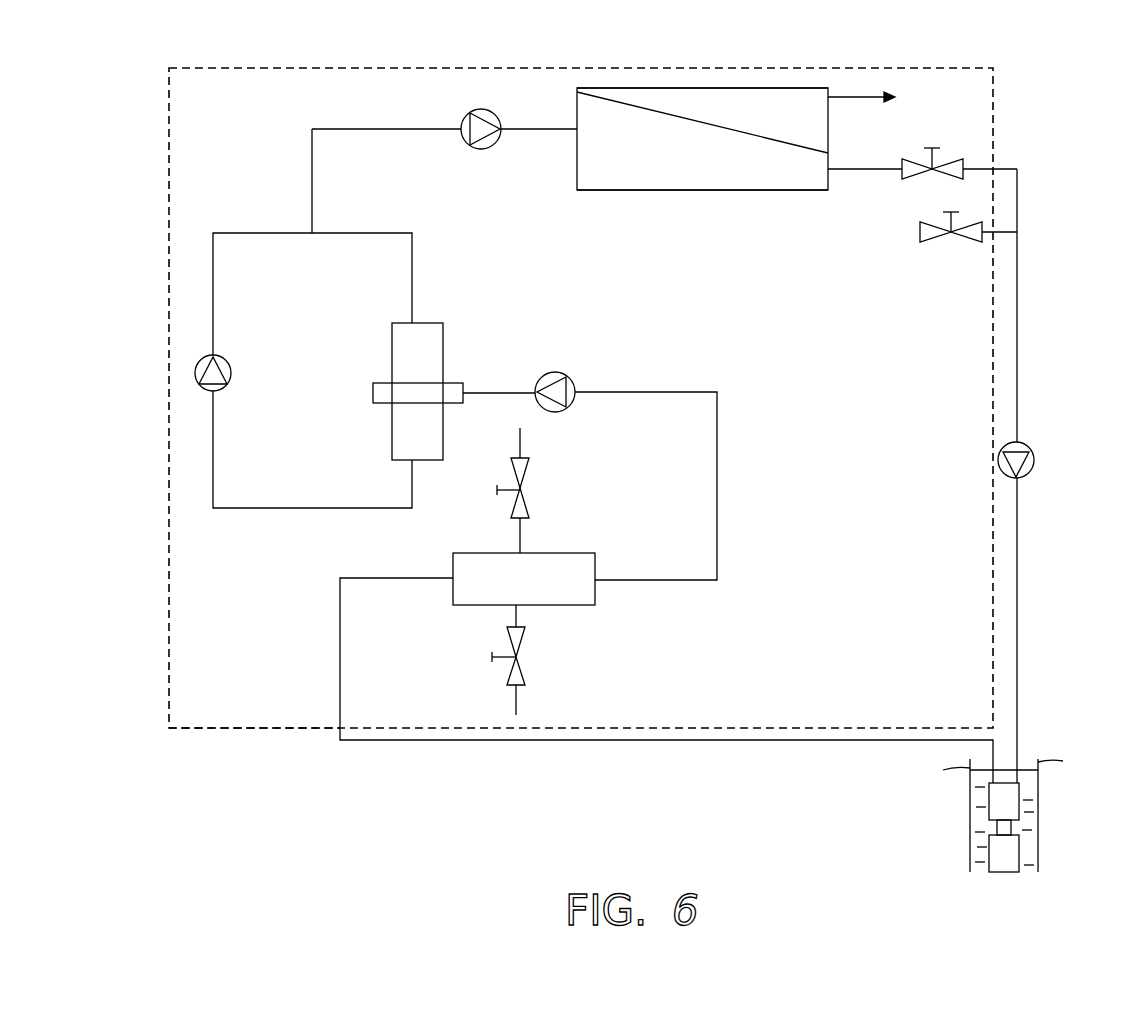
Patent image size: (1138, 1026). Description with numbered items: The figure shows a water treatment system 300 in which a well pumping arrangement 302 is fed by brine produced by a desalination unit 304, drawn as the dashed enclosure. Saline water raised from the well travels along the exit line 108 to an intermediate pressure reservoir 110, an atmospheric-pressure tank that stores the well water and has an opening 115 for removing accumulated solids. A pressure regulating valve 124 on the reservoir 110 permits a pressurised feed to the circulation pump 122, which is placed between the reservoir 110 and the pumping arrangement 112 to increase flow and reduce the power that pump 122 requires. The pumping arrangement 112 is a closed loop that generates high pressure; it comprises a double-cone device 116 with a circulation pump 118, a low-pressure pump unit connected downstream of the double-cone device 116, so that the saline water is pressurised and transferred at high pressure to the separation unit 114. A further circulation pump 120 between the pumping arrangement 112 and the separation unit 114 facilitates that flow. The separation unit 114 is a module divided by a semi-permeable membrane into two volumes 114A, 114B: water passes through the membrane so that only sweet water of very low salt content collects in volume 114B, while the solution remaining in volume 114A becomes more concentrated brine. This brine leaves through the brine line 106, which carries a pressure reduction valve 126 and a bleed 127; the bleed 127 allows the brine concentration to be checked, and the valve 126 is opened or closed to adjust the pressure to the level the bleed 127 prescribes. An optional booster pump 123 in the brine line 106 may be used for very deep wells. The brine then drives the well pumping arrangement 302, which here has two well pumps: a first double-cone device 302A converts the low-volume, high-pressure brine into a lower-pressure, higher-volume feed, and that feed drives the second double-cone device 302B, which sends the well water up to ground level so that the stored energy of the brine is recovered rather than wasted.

The water treatment system 300 is at (541, 49).
The desalination unit 304 is at (305, 730).
The circulation pump 120 is at (490, 146).
The pumping arrangement 112 is at (504, 256).
The circulation pump 118 is at (228, 364).
The double-cone device 116 is at (392, 346).
The circulation pump 122 is at (553, 383).
The intermediate pressure reservoir 110 is at (553, 551).
The pressure regulating valve 124 is at (526, 498).
The opening 115 is at (508, 683).
The exit line 108 is at (650, 740).
The separation unit 114 is at (621, 194).
The volume 114A is at (697, 172).
The volume 114B is at (789, 132).
The pressure reduction valve 126 is at (910, 178).
The bleed 127 is at (930, 242).
The brine line 106 is at (1028, 210).
The booster pump 123 is at (1030, 468).
The well pumping arrangement 302 is at (962, 814).
The first double-cone device 302A is at (1020, 806).
The second double-cone device for well pumping 302B is at (1020, 855).